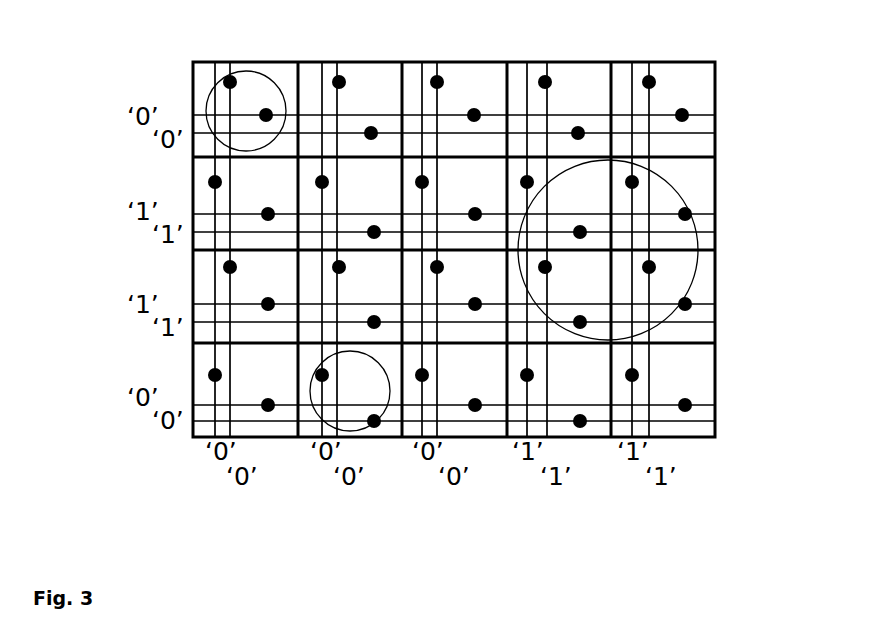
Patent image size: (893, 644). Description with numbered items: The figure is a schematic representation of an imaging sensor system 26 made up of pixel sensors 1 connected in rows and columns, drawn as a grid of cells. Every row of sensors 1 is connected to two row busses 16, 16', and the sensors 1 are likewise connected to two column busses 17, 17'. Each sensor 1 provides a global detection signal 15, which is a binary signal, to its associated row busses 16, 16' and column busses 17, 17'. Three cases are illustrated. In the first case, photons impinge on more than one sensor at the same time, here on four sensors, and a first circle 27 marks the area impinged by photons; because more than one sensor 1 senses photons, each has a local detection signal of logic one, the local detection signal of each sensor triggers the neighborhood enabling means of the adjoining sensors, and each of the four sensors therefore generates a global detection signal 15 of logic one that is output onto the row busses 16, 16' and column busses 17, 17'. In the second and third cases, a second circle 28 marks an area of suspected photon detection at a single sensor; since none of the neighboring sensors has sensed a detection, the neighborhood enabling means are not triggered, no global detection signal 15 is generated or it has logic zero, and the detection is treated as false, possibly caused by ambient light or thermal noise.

The pixel sensor 1 is at (715, 102).
The global detection signal 15 is at (633, 375).
The row bus 16 is at (487, 253).
The row bus 16' is at (490, 196).
The column bus 17 is at (683, 227).
The column bus 17' is at (597, 227).
The imaging sensor system 26 is at (149, 479).
The first circle 27 is at (698, 277).
The second circle 28 is at (212, 87).